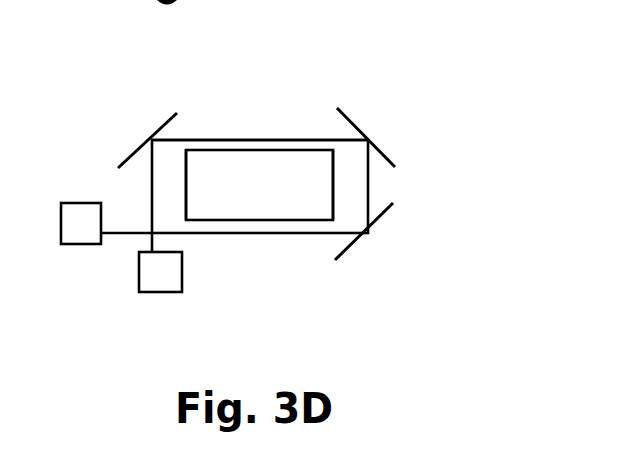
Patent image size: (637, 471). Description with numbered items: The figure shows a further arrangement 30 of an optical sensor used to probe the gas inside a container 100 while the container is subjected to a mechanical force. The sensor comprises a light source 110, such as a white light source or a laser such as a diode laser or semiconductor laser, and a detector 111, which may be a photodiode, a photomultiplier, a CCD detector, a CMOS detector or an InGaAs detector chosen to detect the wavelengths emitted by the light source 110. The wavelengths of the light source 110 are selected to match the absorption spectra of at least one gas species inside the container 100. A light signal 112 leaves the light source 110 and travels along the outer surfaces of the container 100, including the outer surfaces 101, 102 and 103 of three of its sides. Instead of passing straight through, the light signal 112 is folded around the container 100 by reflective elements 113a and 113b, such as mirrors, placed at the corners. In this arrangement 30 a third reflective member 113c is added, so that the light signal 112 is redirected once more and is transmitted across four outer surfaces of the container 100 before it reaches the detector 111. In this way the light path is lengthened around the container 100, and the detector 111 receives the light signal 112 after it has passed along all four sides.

The further arrangement of the optical sensor 30 is at (214, 65).
The container 100 is at (286, 247).
The outer surface 101 is at (273, 140).
The light signal 112 is at (240, 128).
The outer surface 102 is at (346, 195).
The outer surface 103 is at (173, 196).
The reflective element 113a is at (130, 128).
The reflective element 113b is at (425, 100).
The third reflective member 113c is at (381, 243).
The detector 111 is at (51, 240).
The light source 110 is at (129, 284).